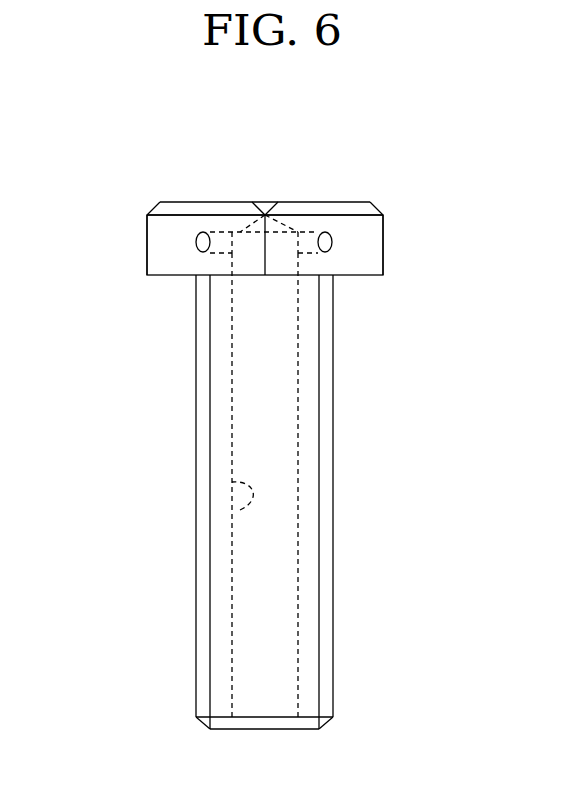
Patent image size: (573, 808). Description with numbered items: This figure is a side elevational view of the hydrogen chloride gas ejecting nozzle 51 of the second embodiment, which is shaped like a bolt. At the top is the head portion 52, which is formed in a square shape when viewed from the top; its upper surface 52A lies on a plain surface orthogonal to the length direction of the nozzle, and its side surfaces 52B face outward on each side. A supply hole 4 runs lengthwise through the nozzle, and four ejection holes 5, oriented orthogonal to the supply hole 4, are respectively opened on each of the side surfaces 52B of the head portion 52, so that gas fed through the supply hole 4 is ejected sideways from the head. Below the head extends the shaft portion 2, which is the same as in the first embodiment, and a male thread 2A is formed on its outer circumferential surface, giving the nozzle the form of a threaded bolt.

The shaft portion 2 is at (353, 423).
The male thread 2A is at (335, 542).
The supply hole 4 is at (240, 510).
The ejection hole 5 is at (196, 248).
The hydrogen chloride gas ejecting nozzle 51 is at (408, 203).
The head portion 52 is at (322, 202).
The upper surface 52A is at (228, 201).
The side surface 52B is at (165, 243).